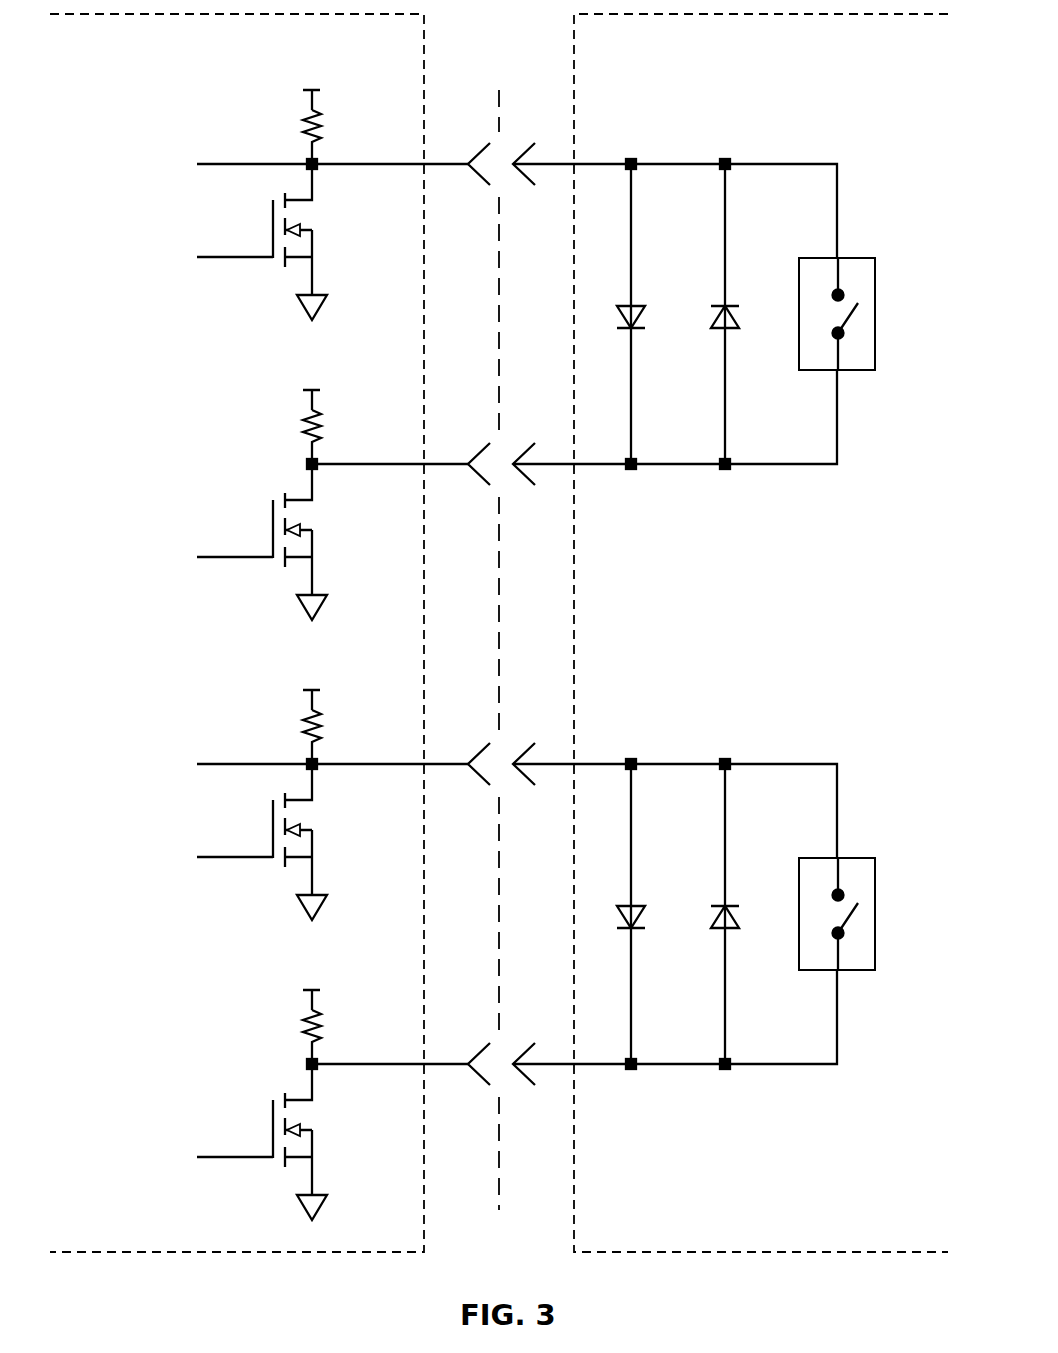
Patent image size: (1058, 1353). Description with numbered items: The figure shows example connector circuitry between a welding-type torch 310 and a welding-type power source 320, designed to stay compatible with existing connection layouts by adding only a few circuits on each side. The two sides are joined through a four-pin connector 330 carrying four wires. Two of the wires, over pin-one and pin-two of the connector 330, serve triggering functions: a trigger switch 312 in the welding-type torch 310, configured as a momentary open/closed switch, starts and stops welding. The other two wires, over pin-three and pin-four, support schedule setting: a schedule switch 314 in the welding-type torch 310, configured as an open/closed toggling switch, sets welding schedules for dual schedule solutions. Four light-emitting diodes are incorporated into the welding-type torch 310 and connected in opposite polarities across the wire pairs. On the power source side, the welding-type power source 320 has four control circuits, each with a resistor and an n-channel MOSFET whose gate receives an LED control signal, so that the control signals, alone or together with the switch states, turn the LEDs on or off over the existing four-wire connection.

The welding-type torch 310 is at (842, 74).
The trigger switch 312 is at (865, 258).
The schedule switch 314 is at (857, 858).
The welding-type power source 320 is at (158, 74).
The 4-pin connector 330 is at (485, 77).